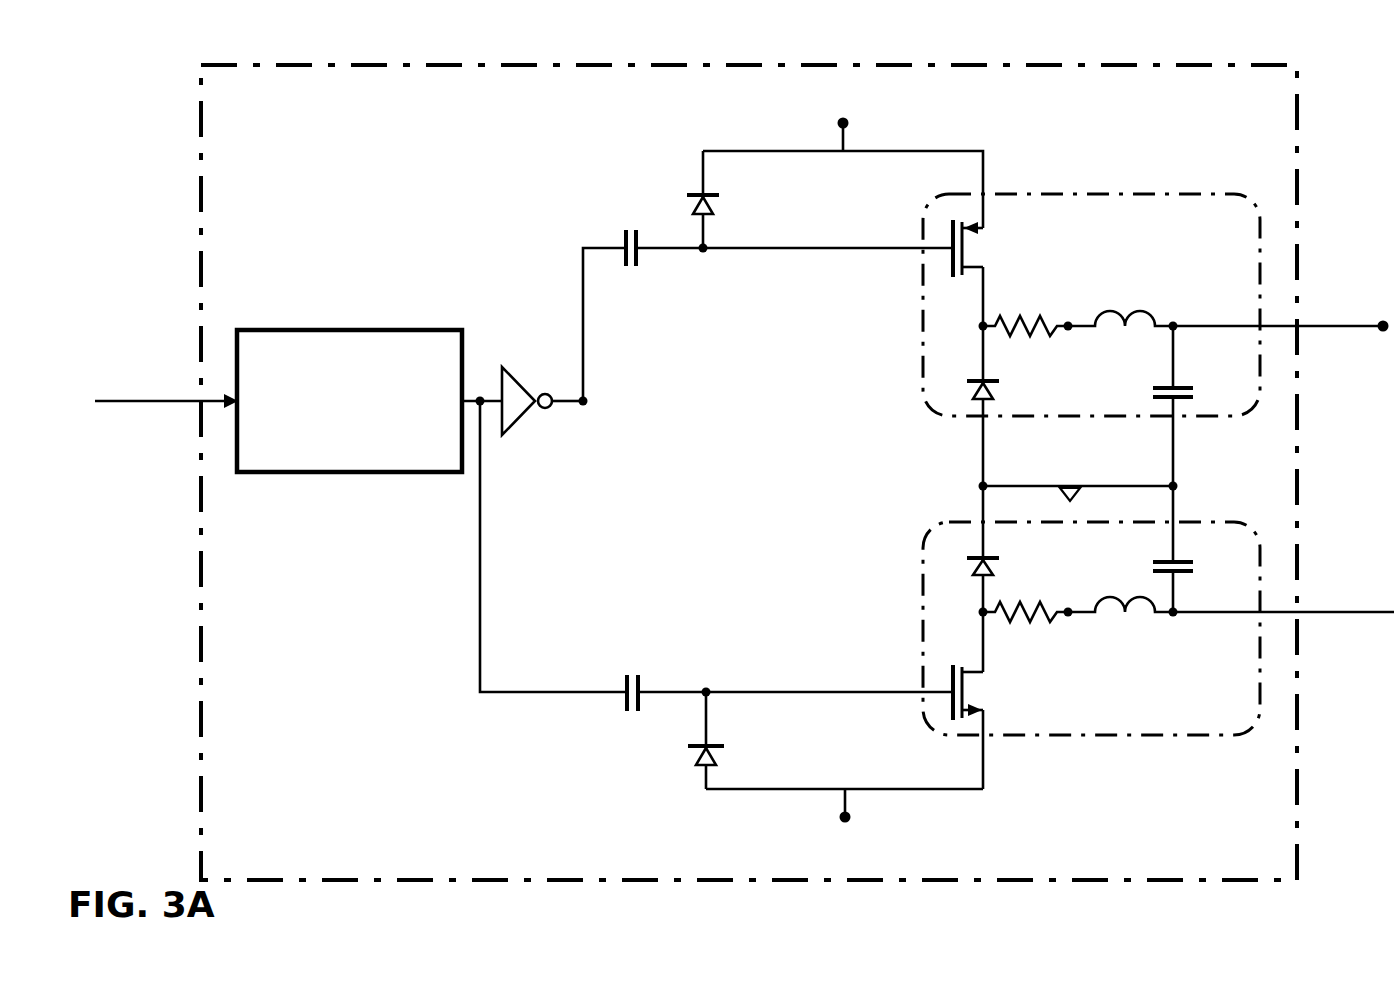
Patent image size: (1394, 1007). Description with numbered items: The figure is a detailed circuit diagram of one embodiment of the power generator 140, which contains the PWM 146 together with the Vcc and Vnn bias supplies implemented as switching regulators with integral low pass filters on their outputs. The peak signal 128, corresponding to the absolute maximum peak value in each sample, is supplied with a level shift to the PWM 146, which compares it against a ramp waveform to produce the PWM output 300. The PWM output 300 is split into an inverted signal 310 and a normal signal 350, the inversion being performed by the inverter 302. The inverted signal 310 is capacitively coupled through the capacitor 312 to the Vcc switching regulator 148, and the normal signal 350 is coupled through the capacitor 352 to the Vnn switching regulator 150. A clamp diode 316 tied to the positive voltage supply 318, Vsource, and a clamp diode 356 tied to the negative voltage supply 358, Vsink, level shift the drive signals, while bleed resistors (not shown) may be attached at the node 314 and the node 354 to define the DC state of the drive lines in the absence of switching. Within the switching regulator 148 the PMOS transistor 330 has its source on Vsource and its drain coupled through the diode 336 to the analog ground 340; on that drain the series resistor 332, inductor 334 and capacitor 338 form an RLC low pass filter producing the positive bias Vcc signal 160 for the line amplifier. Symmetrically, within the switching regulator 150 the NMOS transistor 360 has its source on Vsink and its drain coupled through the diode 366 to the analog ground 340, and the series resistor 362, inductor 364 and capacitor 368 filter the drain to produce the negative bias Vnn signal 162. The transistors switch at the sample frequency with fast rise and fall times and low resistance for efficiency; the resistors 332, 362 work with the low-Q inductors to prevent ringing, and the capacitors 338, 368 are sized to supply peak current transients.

The power generator 140 is at (200, 88).
The peak signal 128 is at (160, 400).
The PWM 146 is at (455, 330).
The PWM output 300 is at (480, 397).
The inverter 302 is at (520, 426).
The inverted signal 310 is at (583, 296).
The capacitor 312 is at (626, 234).
The node 314 is at (705, 253).
The clamp diode 316 is at (722, 197).
The positive voltage supply 318 is at (848, 124).
The Vcc switching regulator 148 is at (1122, 194).
The PMOS transistor 330 is at (968, 243).
The series resistor 332 is at (1042, 326).
The inductor 334 is at (1130, 325).
The diode 336 is at (996, 381).
The capacitor 338 is at (1175, 386).
The analog ground 340 is at (1072, 487).
The Vnn switching regulator 150 is at (932, 528).
The diode 366 is at (996, 558).
The capacitor 368 is at (1175, 563).
The series resistor 362 is at (1012, 614).
The inductor 364 is at (1135, 616).
The NMOS transistor 360 is at (972, 685).
The normal signal 350 is at (480, 622).
The capacitor 352 is at (632, 676).
The node 354 is at (708, 690).
The clamp diode 356 is at (712, 760).
The negative voltage supply 358 is at (850, 818).
The positive bias Vcc signal 160 is at (1300, 327).
The negative bias Vnn signal 162 is at (1300, 612).